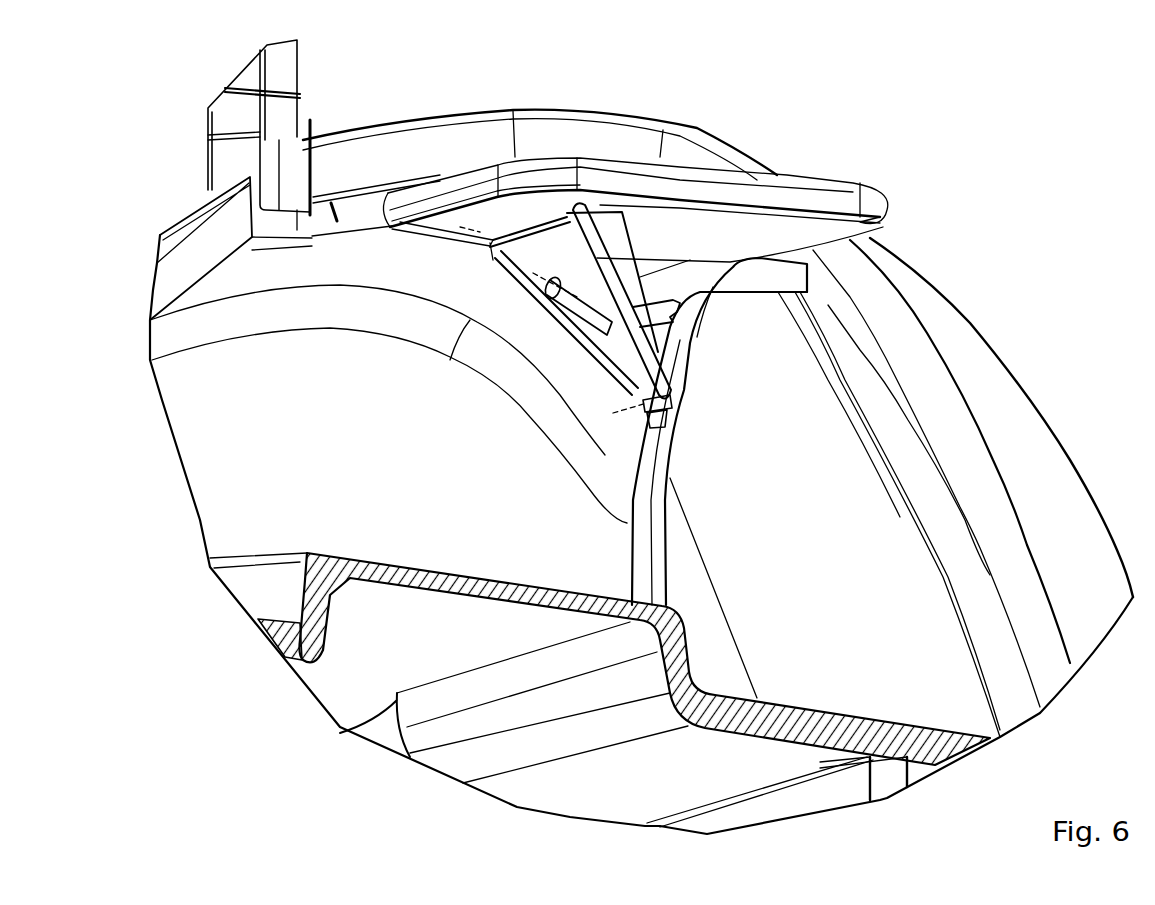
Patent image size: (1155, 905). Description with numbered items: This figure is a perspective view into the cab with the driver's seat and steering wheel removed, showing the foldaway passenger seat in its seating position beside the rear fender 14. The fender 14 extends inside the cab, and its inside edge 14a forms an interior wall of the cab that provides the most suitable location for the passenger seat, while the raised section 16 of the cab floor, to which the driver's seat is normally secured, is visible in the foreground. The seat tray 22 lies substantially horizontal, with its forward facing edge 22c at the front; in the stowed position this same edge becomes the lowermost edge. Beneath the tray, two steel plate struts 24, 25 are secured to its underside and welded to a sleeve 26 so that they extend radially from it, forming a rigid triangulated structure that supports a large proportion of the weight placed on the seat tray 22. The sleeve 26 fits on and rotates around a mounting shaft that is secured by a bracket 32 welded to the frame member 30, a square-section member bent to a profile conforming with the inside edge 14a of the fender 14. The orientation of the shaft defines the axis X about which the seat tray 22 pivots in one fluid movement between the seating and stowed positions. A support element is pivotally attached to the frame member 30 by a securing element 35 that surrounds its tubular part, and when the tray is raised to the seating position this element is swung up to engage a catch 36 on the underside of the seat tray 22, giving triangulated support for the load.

The fender 14 is at (1013, 402).
The inside edge of fender 14a is at (377, 270).
The raised section of the cab floor 16 is at (382, 577).
The seat tray 22 is at (773, 233).
The forward facing edge of the seat tray 22c is at (757, 190).
The strut 24 is at (638, 277).
The strut 25 is at (653, 253).
The sleeve 26 is at (592, 327).
The frame member 30 is at (655, 455).
The bracket 32 is at (657, 327).
The securing element 35 is at (660, 420).
The catch 36 is at (488, 252).
The axis X is at (655, 342).